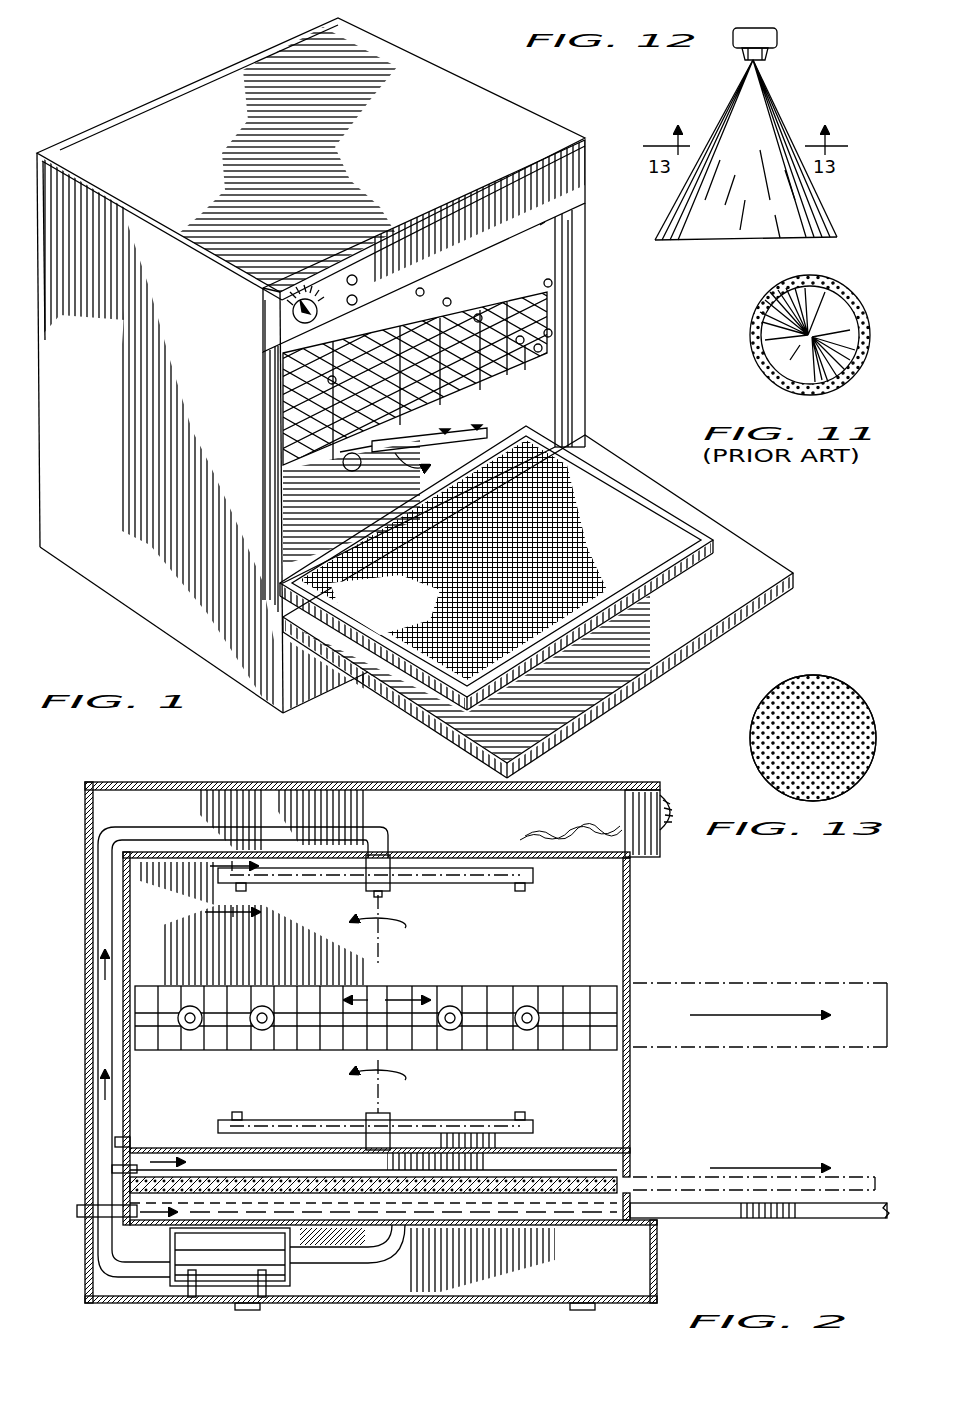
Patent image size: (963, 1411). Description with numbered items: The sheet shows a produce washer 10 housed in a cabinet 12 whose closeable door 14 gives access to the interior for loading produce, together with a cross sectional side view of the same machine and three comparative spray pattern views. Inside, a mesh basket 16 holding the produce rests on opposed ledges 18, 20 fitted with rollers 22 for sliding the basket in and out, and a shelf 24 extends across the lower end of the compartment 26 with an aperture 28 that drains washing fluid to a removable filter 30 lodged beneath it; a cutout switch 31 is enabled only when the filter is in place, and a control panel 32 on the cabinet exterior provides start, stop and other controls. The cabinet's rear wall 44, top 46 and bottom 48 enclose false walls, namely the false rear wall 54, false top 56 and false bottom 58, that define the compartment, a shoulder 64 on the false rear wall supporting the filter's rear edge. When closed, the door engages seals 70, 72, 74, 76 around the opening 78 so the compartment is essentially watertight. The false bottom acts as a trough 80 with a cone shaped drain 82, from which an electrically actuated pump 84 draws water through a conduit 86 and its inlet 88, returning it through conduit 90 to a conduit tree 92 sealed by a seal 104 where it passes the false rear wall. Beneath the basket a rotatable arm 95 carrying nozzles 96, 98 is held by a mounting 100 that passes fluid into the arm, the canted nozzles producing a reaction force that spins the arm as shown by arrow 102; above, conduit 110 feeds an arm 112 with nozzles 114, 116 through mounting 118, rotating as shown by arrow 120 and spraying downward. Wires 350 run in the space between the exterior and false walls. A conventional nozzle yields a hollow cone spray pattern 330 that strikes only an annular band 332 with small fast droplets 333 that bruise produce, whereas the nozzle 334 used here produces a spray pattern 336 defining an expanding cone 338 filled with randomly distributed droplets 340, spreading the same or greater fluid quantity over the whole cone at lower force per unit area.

In FIG. 1, the produce washer 10 is at (415, 398).
In FIG. 2, the produce washer 10 is at (464, 1035).
In FIG. 1, the cabinet 12 is at (100, 553).
In FIG. 2, the cabinet 12 is at (308, 781).
In FIG. 1, the door 14 is at (735, 560).
In FIG. 2, the door 14 is at (848, 1220).
In FIG. 1, the basket 16 is at (552, 333).
In FIG. 1, the ledge 18 is at (548, 380).
In FIG. 2, the ledge 18 is at (572, 987).
In FIG. 1, the ledge 20 is at (276, 518).
In FIG. 1, the rollers 22 is at (526, 352).
In FIG. 1, the shelf 24 is at (545, 430).
In FIG. 2, the shelf 24 is at (560, 1146).
In FIG. 1, the compartment 26 is at (548, 240).
In FIG. 1, the aperture 28 is at (345, 470).
In FIG. 2, the aperture 28 is at (440, 1126).
In FIG. 1, the filter 30 is at (635, 512).
In FIG. 2, the filter 30 is at (605, 1183).
In FIG. 2, the cutout switch 31 is at (88, 1160).
In FIG. 1, the control panel 32 is at (303, 298).
In FIG. 2, the control panel 32 is at (665, 793).
In FIG. 2, the rear wall 44 is at (85, 1100).
In FIG. 2, the top 46 is at (215, 783).
In FIG. 2, the bottom 48 is at (276, 1297).
In FIG. 2, the false rear wall 54 is at (130, 970).
In FIG. 2, the false top 56 is at (420, 850).
In FIG. 2, the false bottom 58 is at (523, 1228).
In FIG. 2, the shoulder 64 is at (85, 1175).
In FIG. 1, the seal 70 is at (568, 262).
In FIG. 1, the seal 72 is at (268, 433).
In FIG. 2, the seal 74 is at (633, 862).
In FIG. 2, the seal 76 is at (640, 1195).
In FIG. 1, the opening 78 is at (552, 285).
In FIG. 2, the trough 80 is at (460, 1226).
In FIG. 2, the drain 82 is at (392, 1232).
In FIG. 2, the pump 84 is at (222, 1278).
In FIG. 2, the conduit 86 is at (336, 1265).
In FIG. 2, the inlet 88 is at (375, 1265).
In FIG. 2, the conduit 90 is at (160, 1282).
In FIG. 2, the conduit tree 92 is at (195, 1160).
In FIG. 2, the arm 95 is at (320, 1120).
In FIG. 2, the nozzle 96 is at (240, 1112).
In FIG. 2, the nozzle 98 is at (522, 1112).
In FIG. 2, the mounting 100 is at (390, 1122).
In FIG. 2, the arrow 102 is at (395, 1078).
In FIG. 2, the seal 104 is at (130, 1135).
In FIG. 2, the conduit 110 is at (250, 827).
In FIG. 2, the arm 112 is at (455, 884).
In FIG. 2, the nozzle 114 is at (246, 890).
In FIG. 2, the nozzle 116 is at (525, 890).
In FIG. 2, the mounting 118 is at (388, 890).
In FIG. 2, the arrow 120 is at (392, 928).
In FIG. 11, the spray pattern 330 is at (750, 322).
In FIG. 11, the annular band 332 is at (763, 360).
In FIG. 11, the droplets 333 is at (752, 336).
In FIG. 12, the nozzle 334 is at (780, 42).
In FIG. 12, the spray pattern 336 is at (765, 118).
In FIG. 12, the expanding cone 338 is at (658, 238).
In FIG. 13, the expanding cone 338 is at (752, 735).
In FIG. 13, the droplets 340 is at (815, 690).
In FIG. 2, the wires 350 is at (585, 832).